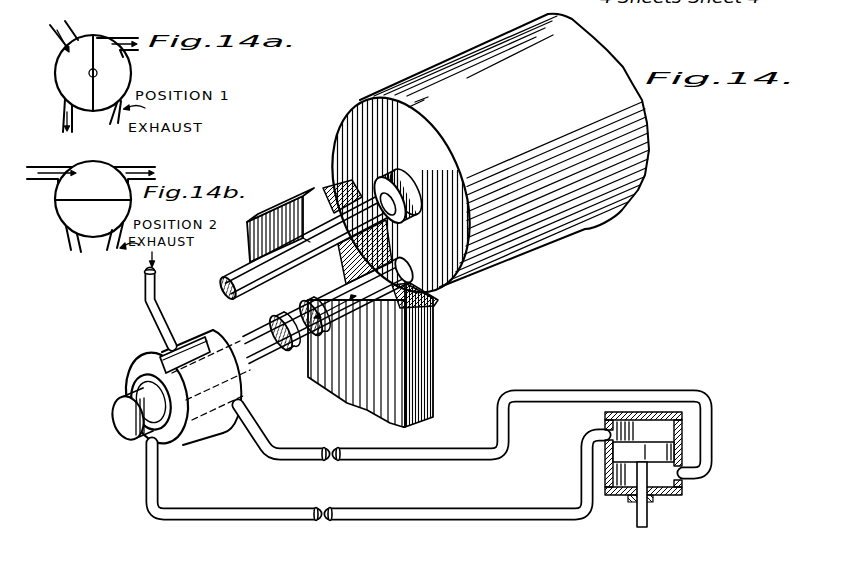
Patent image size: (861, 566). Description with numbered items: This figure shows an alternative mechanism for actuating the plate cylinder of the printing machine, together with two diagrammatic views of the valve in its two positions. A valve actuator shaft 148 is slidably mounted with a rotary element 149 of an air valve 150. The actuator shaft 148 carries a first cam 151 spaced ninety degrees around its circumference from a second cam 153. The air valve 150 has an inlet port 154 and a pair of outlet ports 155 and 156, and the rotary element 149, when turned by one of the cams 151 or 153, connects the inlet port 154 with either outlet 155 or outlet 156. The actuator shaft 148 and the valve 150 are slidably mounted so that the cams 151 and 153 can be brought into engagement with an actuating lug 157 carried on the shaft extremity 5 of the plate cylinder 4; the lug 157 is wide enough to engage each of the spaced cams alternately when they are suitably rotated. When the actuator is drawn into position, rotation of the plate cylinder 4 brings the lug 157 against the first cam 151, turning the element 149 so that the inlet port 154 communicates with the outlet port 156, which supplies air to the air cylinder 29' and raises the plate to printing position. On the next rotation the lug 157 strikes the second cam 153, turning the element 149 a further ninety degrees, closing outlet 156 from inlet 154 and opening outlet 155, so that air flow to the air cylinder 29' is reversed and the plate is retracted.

In FIG. 14, the plate cylinder 4 is at (583, 218).
In FIG. 14, the shaft extremity 5 is at (257, 262).
In FIG. 14, the air cylinder 29' is at (604, 469).
In FIG. 14, the valve actuator shaft 148 is at (262, 377).
In FIG. 14, the rotary element 149 is at (192, 342).
In FIG. 14, the air valve 150 is at (114, 422).
In FIG. 14, the first cam 151 is at (298, 297).
In FIG. 14, the second cam 153 is at (291, 345).
In FIG. 14A, the inlet port 154 is at (60, 25).
In FIG. 14B, the inlet port 154 is at (35, 180).
In FIG. 14, the inlet port 154 is at (143, 287).
In FIG. 14A, the outlet port 155 is at (58, 114).
In FIG. 14B, the outlet port 155 is at (63, 240).
In FIG. 14, the outlet port 155 is at (172, 458).
In FIG. 14A, the outlet port 156 is at (138, 31).
In FIG. 14B, the outlet port 156 is at (128, 165).
In FIG. 14, the outlet port 156 is at (237, 410).
In FIG. 14, the actuating lug 157 is at (288, 199).